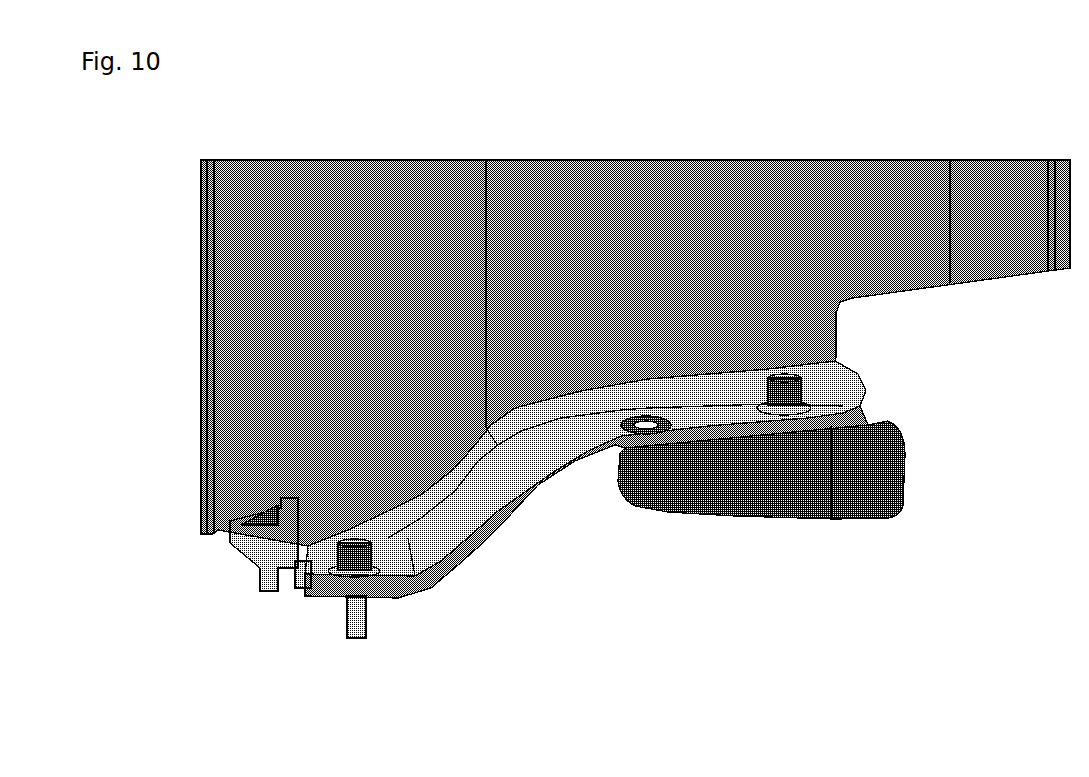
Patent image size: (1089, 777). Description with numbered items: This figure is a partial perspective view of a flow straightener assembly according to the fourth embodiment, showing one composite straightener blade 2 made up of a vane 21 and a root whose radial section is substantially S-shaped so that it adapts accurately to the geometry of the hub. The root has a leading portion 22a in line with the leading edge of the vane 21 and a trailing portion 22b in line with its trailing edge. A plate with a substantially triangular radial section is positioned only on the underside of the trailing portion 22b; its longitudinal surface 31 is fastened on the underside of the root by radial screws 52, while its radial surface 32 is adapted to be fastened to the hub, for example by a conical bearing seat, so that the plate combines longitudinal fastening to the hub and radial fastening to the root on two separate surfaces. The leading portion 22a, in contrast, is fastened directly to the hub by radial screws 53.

The blade 2 is at (788, 119).
The vane 21 is at (563, 184).
The leading portion 22a is at (314, 593).
The trailing portion 22b is at (835, 405).
The longitudinal surface 31 is at (700, 437).
The radial surface 32 is at (904, 462).
The radial screw 52 is at (830, 360).
The radial screw 53 is at (363, 618).